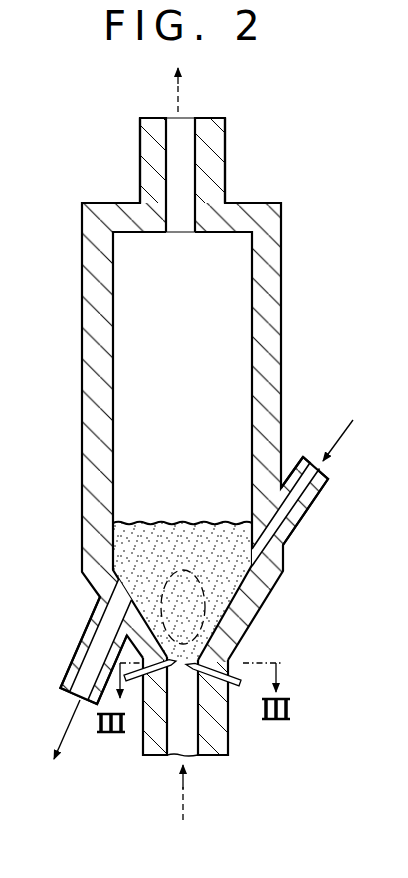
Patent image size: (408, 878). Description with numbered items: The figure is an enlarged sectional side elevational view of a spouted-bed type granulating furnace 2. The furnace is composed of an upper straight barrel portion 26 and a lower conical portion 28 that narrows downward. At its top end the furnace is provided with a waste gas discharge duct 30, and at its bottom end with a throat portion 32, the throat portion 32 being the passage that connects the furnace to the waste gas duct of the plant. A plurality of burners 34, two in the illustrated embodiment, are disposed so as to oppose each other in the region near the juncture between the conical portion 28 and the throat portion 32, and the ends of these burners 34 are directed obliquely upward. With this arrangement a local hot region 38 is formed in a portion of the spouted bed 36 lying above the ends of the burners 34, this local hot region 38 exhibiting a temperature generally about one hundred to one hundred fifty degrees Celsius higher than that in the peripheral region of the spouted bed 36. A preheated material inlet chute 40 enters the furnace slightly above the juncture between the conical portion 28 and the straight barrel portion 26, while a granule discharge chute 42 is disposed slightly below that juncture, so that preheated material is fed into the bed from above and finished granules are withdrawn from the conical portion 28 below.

The spouted-bed type granulating furnace 2 is at (199, 444).
The straight barrel portion 26 is at (80, 422).
The conical portion 28 is at (268, 597).
The waste gas discharge duct 30 is at (226, 150).
The throat portion 32 is at (230, 742).
The burners 34 is at (133, 680).
The spouted bed 36 is at (128, 547).
The local hot region 38 is at (200, 625).
The preheated material inlet chute 40 is at (320, 506).
The granule discharge chute 42 is at (72, 670).